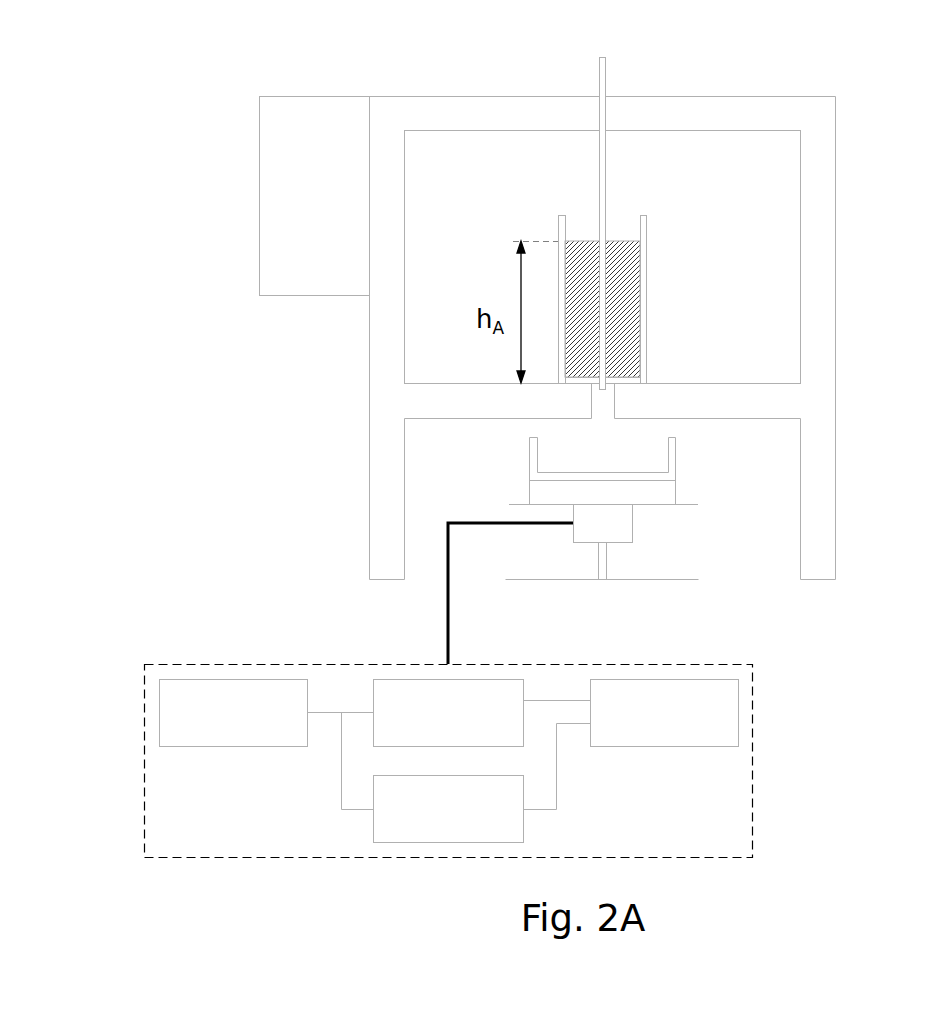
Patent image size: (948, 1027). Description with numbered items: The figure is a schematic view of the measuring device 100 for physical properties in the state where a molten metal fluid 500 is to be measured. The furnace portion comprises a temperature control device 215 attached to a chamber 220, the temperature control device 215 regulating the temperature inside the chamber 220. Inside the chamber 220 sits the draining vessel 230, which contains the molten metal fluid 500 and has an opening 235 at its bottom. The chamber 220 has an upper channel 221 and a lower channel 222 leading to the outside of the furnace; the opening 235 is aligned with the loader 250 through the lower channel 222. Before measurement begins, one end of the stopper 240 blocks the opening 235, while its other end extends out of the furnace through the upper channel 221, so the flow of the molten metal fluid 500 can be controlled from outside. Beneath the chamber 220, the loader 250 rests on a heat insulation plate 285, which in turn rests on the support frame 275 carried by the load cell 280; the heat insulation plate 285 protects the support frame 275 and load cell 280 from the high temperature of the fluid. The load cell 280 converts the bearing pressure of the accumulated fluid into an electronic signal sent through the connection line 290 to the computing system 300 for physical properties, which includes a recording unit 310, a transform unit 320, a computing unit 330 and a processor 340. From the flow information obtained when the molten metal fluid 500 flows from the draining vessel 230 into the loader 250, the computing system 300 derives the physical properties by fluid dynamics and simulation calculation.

The measuring device for physical property 100 is at (83, 52).
The temperature control device 215 is at (277, 103).
The chamber 220 is at (505, 130).
The upper channel 221 is at (607, 117).
The lower channel 222 is at (591, 403).
The draining vessel 230 is at (643, 295).
The opening 235 is at (610, 374).
The stopper 240 is at (600, 72).
The loader 250 is at (533, 453).
The support frame 275 is at (510, 504).
The load cell 280 is at (623, 527).
The heat insulation plate 285 is at (538, 489).
The connection line 290 is at (448, 618).
The computing system for physical properties 300 is at (265, 664).
The recording unit 310 is at (190, 679).
The transform unit 320 is at (405, 679).
The computing unit 330 is at (388, 843).
The processor 340 is at (738, 700).
The molten metal fluid 500 is at (625, 325).